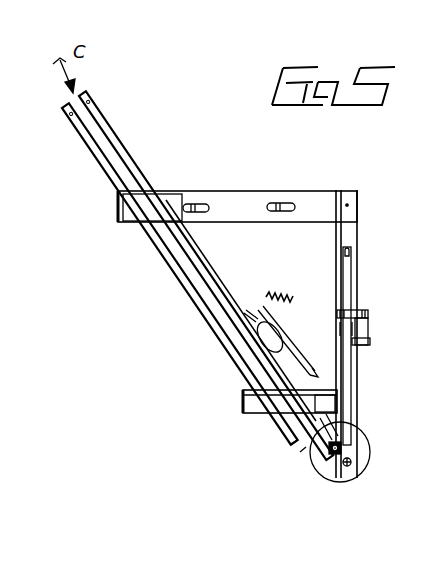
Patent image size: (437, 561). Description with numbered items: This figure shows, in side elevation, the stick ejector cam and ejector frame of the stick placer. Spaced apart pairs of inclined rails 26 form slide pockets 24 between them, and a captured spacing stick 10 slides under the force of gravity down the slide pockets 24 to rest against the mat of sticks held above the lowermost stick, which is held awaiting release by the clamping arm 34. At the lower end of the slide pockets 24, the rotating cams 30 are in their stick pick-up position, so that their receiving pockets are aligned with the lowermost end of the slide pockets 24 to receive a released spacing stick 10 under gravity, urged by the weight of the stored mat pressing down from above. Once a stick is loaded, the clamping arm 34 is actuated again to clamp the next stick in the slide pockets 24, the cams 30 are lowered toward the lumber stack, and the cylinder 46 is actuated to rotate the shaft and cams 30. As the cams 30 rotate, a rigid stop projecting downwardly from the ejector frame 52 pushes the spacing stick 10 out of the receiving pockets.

The slide pocket 24 is at (76, 94).
The inclined rail 26 is at (106, 118).
The ejector frame 52 is at (364, 211).
The cylinder 46 is at (373, 338).
The clamping arm 34 is at (303, 367).
The spacing stick 10 is at (292, 432).
The rotating cam 30 is at (333, 472).